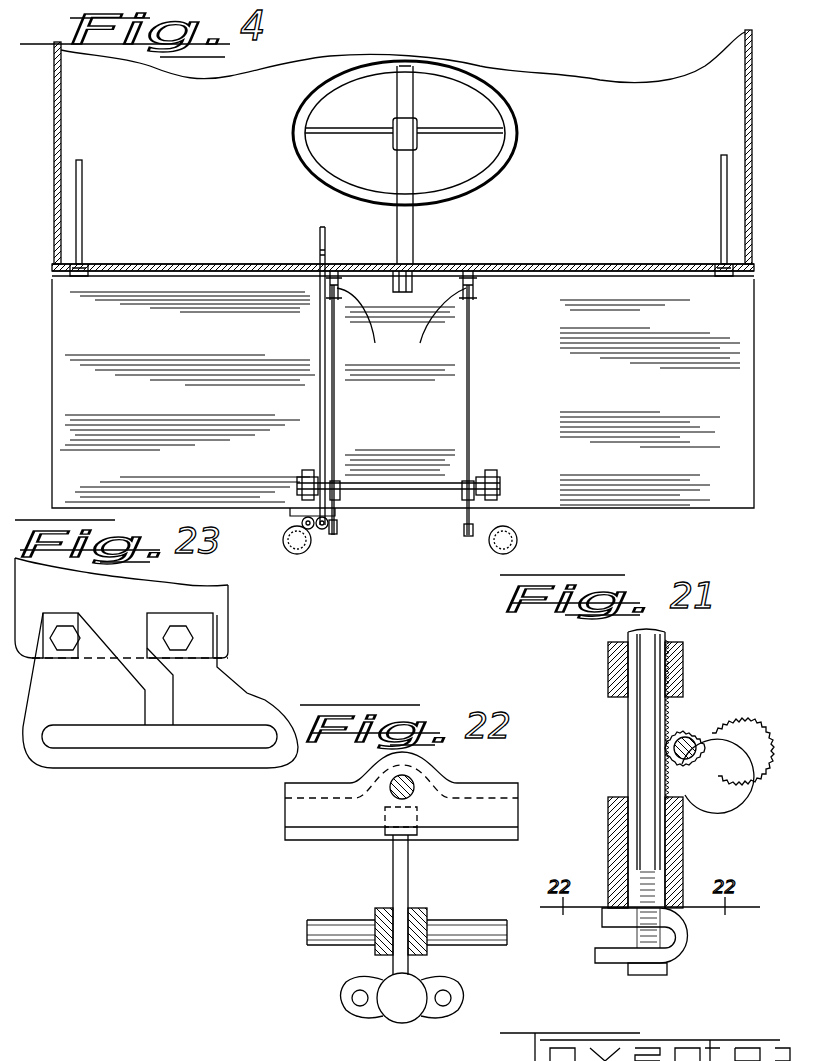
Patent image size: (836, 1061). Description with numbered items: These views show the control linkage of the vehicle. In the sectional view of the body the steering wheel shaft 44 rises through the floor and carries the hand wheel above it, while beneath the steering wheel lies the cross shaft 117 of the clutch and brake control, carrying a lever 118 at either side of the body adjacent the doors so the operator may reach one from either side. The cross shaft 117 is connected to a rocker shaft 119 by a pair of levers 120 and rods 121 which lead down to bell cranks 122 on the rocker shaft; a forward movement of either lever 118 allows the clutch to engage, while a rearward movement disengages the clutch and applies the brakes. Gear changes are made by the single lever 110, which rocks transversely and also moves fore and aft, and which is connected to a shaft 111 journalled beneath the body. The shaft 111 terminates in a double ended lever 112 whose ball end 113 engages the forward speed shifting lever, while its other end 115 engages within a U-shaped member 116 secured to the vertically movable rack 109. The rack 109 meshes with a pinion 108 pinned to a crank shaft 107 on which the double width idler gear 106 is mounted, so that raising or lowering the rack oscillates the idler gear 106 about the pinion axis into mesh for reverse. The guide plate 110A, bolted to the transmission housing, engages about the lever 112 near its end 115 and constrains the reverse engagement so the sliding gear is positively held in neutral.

In FIG. 4, the steering wheel shaft 44 is at (413, 251).
In FIG. 4, the cross shaft 117 is at (611, 275).
In FIG. 4, the levers 118 is at (82, 238).
In FIG. 4, the lever 110 is at (320, 240).
In FIG. 23, the guide plate 110A is at (215, 757).
In FIG. 4, the levers 120 is at (401, 322).
In FIG. 4, the rods 121 is at (468, 405).
In FIG. 4, the rocker shaft 119 is at (392, 488).
In FIG. 4, the bell cranks 122 is at (468, 513).
In FIG. 4, the shaft 111 is at (308, 520).
In FIG. 22, the shaft 111 is at (490, 946).
In FIG. 22, the U-shaped member 116 is at (500, 815).
In FIG. 21, the U-shaped member 116 is at (622, 927).
In FIG. 22, the end 115 is at (390, 838).
In FIG. 22, the double ended lever 112 is at (402, 900).
In FIG. 22, the ball end 113 is at (405, 1010).
In FIG. 21, the vertically movable rack 109 is at (640, 753).
In FIG. 21, the pinion 108 is at (687, 747).
In FIG. 21, the crank shaft 107 is at (707, 733).
In FIG. 21, the double width idler gear 106 is at (727, 820).